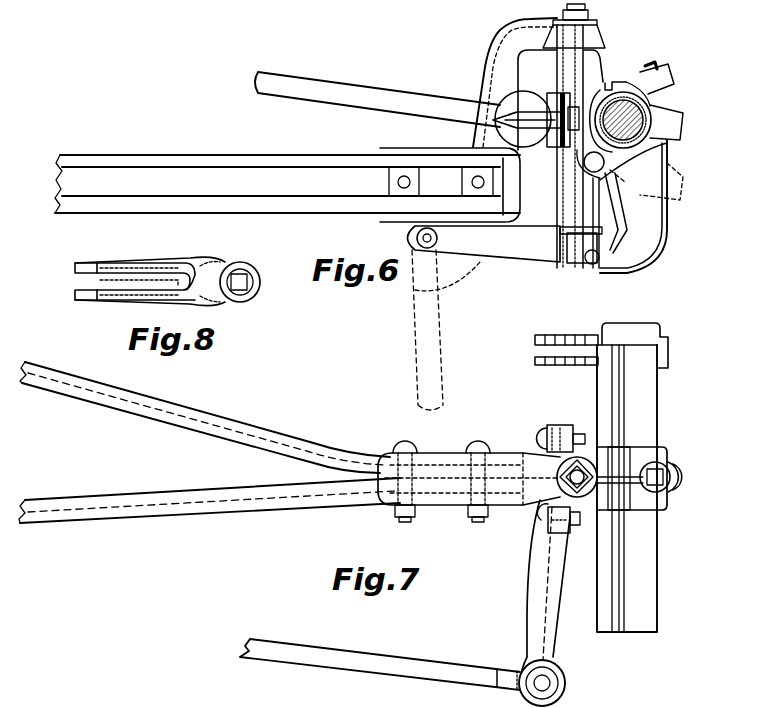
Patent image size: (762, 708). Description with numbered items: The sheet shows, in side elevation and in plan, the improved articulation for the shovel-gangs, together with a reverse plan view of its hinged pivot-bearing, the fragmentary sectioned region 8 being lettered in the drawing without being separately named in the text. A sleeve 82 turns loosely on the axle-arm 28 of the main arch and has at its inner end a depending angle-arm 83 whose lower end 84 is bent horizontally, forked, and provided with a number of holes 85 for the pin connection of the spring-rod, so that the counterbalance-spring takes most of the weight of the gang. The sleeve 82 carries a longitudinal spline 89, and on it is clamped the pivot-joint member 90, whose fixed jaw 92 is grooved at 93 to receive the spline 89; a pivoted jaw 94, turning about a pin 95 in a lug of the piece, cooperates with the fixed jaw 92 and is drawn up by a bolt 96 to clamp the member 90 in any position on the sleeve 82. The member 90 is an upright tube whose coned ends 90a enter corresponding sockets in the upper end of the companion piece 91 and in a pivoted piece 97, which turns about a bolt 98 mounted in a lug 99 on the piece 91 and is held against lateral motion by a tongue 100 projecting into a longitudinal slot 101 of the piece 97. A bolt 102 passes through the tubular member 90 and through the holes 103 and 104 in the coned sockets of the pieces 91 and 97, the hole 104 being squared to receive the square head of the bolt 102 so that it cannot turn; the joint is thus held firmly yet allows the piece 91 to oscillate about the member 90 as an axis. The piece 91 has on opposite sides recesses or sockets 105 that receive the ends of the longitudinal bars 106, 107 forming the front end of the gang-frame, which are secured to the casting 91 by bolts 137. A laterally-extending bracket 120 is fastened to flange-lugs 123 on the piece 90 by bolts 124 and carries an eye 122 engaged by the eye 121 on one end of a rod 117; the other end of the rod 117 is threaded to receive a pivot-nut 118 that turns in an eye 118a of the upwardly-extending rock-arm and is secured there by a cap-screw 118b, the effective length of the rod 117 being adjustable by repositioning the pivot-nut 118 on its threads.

In FIG. 6, the frame 8 is at (606, 292).
In FIG. 6, the axle-arm 28 is at (642, 118).
In FIG. 6, the sleeve 82 is at (681, 137).
In FIG. 7, the sleeve 82 is at (645, 421).
In FIG. 6, the depending angle-arm 83 is at (633, 206).
In FIG. 7, the depending angle-arm 83 is at (665, 361).
In FIG. 6, the lower end of angle-arm 84 is at (580, 266).
In FIG. 7, the lower end of angle-arm 84 is at (535, 360).
In FIG. 6, the holes 85 is at (592, 270).
In FIG. 6, the longitudinal spline 89 is at (620, 83).
In FIG. 7, the longitudinal spline 89 is at (617, 401).
In FIG. 6, the pivot-joint member 90 is at (572, 197).
In FIG. 7, the pivot-joint member 90 is at (597, 443).
In FIG. 6, the coned ends 90a is at (585, 41).
In FIG. 6, the pivot-joint member 91 is at (502, 70).
In FIG. 7, the pivot-joint member 91 is at (440, 463).
In FIG. 6, the fixed jaw 92 is at (665, 73).
In FIG. 7, the fixed jaw 92 is at (643, 457).
In FIG. 6, the groove 93 is at (612, 85).
In FIG. 6, the pivoted jaw 94 is at (605, 169).
In FIG. 7, the pivoted jaw 94 is at (660, 507).
In FIG. 6, the pin 95 is at (608, 185).
In FIG. 6, the bolt 96 is at (662, 111).
In FIG. 7, the bolt 96 is at (670, 473).
In FIG. 6, the pivoted piece 97 is at (398, 336).
In FIG. 8, the pivoted piece 97 is at (205, 276).
In FIG. 6, the bolt 98 is at (426, 247).
In FIG. 6, the lug 99 is at (414, 233).
In FIG. 6, the tongue 100 is at (520, 263).
In FIG. 8, the longitudinal slot 101 is at (138, 284).
In FIG. 6, the bolt 102 is at (562, 12).
In FIG. 7, the bolt 102 is at (558, 494).
In FIG. 6, the hole 103 is at (563, 33).
In FIG. 7, the hole 103 is at (588, 470).
In FIG. 8, the hole 104 is at (245, 281).
In FIG. 6, the recesses or sockets 105 is at (510, 182).
In FIG. 6, the longitudinal bar 106 is at (287, 184).
In FIG. 7, the longitudinal bar 106 is at (111, 500).
In FIG. 7, the longitudinal bar 107 is at (146, 417).
In FIG. 6, the rod 117 is at (322, 91).
In FIG. 7, the rod 117 is at (350, 662).
In FIG. 7, the pivot-nut 118 is at (291, 699).
In FIG. 7, the eye 118a is at (440, 698).
In FIG. 7, the cap-screw 118b is at (270, 702).
In FIG. 6, the laterally-extending bracket 120 is at (517, 42).
In FIG. 7, the laterally-extending bracket 120 is at (557, 617).
In FIG. 6, the eye 121 is at (508, 106).
In FIG. 7, the eye 121 is at (497, 675).
In FIG. 6, the eye 122 is at (500, 121).
In FIG. 7, the eye 122 is at (562, 687).
In FIG. 6, the flange-lugs 123 is at (558, 95).
In FIG. 7, the flange-lugs 123 is at (567, 426).
In FIG. 6, the bolts 124 is at (577, 107).
In FIG. 7, the bolts 124 is at (545, 441).
In FIG. 6, the bolts 137 is at (478, 178).
In FIG. 7, the bolts 137 is at (405, 449).